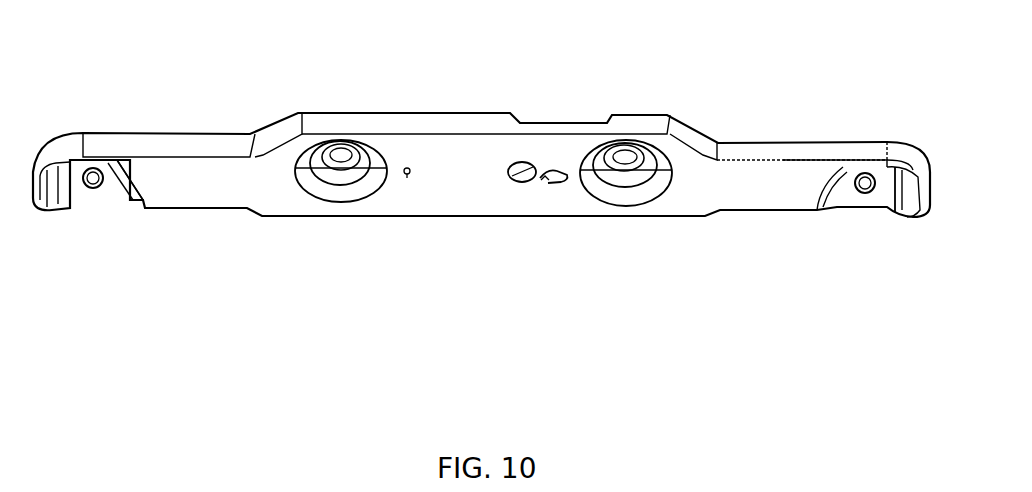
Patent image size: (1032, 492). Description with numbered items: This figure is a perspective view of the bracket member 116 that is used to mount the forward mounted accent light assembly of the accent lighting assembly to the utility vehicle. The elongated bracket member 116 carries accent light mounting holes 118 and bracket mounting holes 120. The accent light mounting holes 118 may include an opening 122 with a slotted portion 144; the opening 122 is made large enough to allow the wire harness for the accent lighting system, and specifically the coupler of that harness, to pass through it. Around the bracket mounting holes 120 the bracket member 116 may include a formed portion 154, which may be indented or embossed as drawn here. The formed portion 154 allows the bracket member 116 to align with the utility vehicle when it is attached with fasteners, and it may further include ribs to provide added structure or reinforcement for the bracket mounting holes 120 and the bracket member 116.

The bracket member 116 is at (405, 65).
The accent light mounting holes 118 is at (405, 180).
The bracket mounting holes 120 is at (90, 189).
The opening 122 is at (524, 172).
The slotted portion 144 is at (565, 183).
The formed portion 154 is at (133, 200).